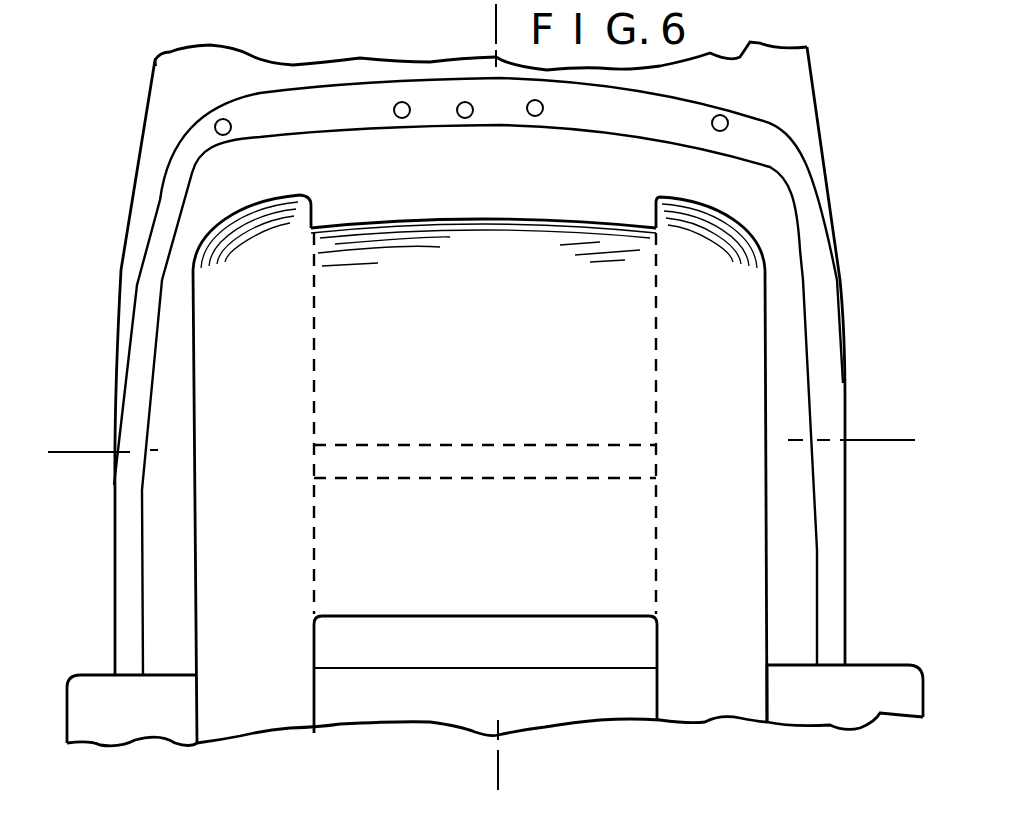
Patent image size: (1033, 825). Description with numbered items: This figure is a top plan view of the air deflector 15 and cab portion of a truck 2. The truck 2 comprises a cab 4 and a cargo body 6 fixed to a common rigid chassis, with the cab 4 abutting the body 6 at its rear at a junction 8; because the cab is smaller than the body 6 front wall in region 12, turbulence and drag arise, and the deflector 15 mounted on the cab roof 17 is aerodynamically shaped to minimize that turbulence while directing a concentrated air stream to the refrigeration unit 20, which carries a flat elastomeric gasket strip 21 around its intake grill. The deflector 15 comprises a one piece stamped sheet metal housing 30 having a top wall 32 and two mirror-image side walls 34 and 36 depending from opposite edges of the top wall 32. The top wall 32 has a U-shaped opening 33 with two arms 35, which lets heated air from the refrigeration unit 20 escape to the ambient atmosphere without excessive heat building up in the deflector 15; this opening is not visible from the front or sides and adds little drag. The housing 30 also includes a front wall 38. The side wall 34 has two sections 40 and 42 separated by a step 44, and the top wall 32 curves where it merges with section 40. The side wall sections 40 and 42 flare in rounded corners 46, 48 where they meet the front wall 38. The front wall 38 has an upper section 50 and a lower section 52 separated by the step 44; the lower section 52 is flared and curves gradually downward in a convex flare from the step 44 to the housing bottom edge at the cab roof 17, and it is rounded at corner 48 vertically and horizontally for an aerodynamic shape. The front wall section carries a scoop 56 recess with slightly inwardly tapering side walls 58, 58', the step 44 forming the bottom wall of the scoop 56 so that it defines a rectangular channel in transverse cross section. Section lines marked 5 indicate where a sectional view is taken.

The truck 2 is at (242, 42).
The cab 4 is at (760, 80).
The cargo body 6 is at (857, 705).
The junction 8 is at (478, 25).
The region 12 is at (867, 663).
The air deflector 15 is at (860, 261).
The cab roof 17 is at (253, 124).
The refrigeration unit 20 is at (618, 552).
The gasket strip 21 is at (332, 463).
The housing 30 is at (855, 154).
The top wall 32 is at (488, 354).
The U-shaped opening 33 is at (418, 616).
The side wall 34 is at (100, 654).
The arms 35 is at (237, 708).
The side wall 36 is at (864, 360).
The front wall 38 is at (335, 178).
The side wall section 40 is at (192, 345).
The side wall section 42 is at (156, 316).
The step 44 is at (167, 418).
The rounded corner 46 is at (263, 212).
The rounded corner 48 is at (200, 158).
The upper section 50 is at (467, 233).
The lower section 52 is at (618, 134).
The scoop 56 is at (358, 347).
The scoop side wall 58 is at (346, 423).
The scoop side wall 58' is at (618, 423).
The section line 5- 5 is at (73, 465).